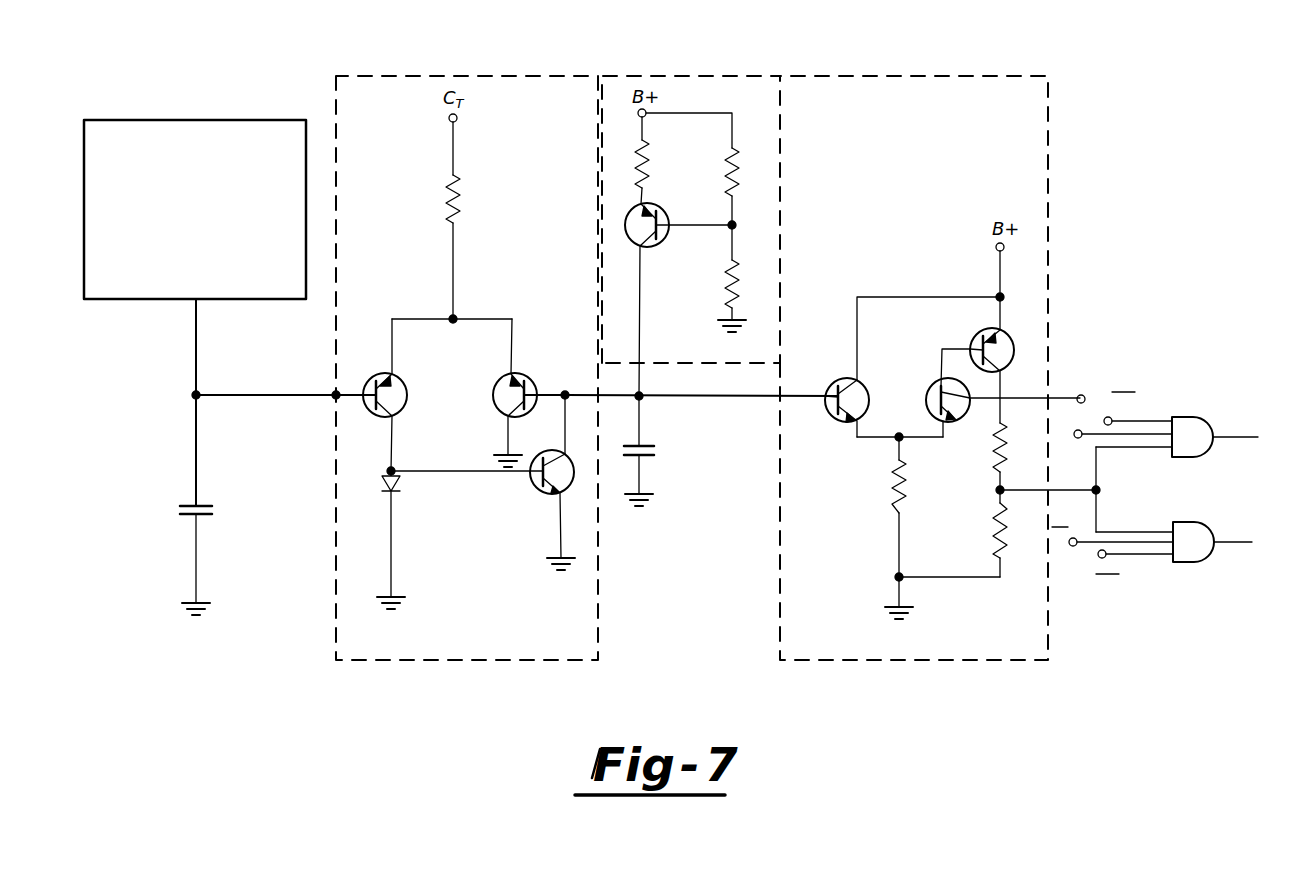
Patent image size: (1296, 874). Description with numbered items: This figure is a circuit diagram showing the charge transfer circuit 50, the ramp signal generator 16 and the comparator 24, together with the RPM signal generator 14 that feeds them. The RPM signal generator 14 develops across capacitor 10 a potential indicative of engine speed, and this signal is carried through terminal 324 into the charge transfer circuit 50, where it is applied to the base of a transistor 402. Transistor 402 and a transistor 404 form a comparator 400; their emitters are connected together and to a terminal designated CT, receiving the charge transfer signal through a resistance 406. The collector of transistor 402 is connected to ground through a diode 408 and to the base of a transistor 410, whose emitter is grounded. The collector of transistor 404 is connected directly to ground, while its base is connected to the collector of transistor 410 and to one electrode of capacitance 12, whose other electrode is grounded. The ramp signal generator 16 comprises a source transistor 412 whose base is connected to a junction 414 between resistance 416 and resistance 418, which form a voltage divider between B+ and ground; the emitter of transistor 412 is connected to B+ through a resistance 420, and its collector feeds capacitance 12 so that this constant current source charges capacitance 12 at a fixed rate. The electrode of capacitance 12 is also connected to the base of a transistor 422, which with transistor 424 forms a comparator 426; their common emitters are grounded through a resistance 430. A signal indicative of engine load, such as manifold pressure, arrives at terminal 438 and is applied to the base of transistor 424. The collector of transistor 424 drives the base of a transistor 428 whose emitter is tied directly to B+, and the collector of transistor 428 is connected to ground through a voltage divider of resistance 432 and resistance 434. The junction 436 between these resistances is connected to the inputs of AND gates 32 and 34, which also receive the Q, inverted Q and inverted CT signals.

The capacitance 10 is at (198, 505).
The capacitance 12 is at (651, 454).
The RPM signal generator 14 is at (236, 94).
The ramp signal generator 16 is at (755, 76).
The comparator 24 is at (1050, 136).
The AND gate 32 is at (1232, 395).
The AND gate 34 is at (1200, 521).
The charge transfer circuit 50 is at (422, 661).
The terminal 324 is at (334, 391).
The comparator 400 is at (478, 382).
The transistor 402 is at (366, 397).
The transistor 404 is at (519, 376).
The resistance 406 is at (460, 180).
The diode 408 is at (398, 484).
The transistor 410 is at (538, 492).
The source transistor 412 is at (663, 218).
The junction 414 is at (726, 232).
The resistance 416 is at (722, 160).
The resistance 418 is at (722, 284).
The resistance 420 is at (656, 150).
The transistor 422 is at (847, 378).
The transistor 424 is at (940, 385).
The comparator 426 is at (922, 430).
The transistor 428 is at (1010, 344).
The resistance 430 is at (893, 496).
The resistance 432 is at (998, 426).
The resistance 434 is at (993, 528).
The junction 436 is at (996, 490).
The terminal 438 is at (1082, 395).